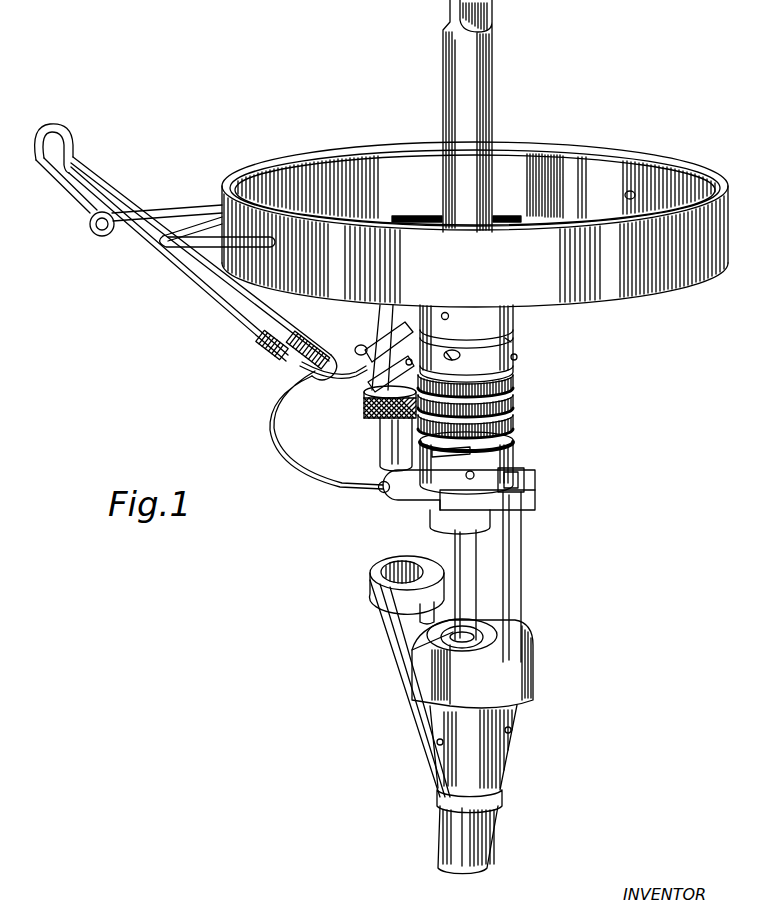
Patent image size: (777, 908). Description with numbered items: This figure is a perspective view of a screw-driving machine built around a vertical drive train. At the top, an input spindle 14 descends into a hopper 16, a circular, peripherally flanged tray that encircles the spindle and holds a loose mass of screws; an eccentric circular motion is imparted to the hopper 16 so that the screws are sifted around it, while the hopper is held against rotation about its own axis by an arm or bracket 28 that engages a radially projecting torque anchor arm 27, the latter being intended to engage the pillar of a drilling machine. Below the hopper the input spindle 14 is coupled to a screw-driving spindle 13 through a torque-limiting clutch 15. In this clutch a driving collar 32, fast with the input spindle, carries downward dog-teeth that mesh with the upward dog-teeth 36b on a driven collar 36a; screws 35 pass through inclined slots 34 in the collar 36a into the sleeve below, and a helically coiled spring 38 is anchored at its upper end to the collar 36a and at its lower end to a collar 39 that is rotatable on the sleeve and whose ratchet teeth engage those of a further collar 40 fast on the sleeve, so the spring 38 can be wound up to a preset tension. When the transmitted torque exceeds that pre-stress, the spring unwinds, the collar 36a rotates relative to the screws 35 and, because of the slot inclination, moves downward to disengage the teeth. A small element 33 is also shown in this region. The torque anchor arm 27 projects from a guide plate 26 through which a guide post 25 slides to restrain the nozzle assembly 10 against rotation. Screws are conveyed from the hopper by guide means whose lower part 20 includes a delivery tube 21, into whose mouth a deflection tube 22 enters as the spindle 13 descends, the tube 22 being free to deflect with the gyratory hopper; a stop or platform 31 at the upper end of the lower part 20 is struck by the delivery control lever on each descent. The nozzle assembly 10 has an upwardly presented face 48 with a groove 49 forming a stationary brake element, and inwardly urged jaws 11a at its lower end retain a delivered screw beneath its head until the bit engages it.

The nozzle assembly 10 is at (518, 722).
The jaws 11a is at (440, 825).
The screw-driving spindle 13 is at (456, 542).
The input spindle 14 is at (476, 87).
The torque-limiting clutch 15 is at (518, 341).
The hopper 16 is at (549, 152).
The lower part of guide means 20 is at (390, 620).
The delivery tube 21 is at (390, 568).
The deflection tube 22 is at (383, 430).
The guide post 25 is at (512, 533).
The guide plate 26 is at (537, 500).
The torque anchor arm 27 is at (150, 267).
The arm or bracket 28 is at (176, 178).
The stop or platform 31 is at (410, 585).
The collar (driving clutch member) 32 is at (470, 316).
The stop 33 is at (518, 357).
The inclined slots 34 is at (455, 358).
The screws 35 is at (438, 345).
The collar (driven clutch member) 36a is at (494, 362).
The dog-teeth 36b is at (516, 335).
The helically coiled spring 38 is at (515, 398).
The collar 39 is at (516, 425).
The further collar 40 is at (475, 455).
The upwardly presented face 48 is at (492, 634).
The groove 49 is at (500, 638).